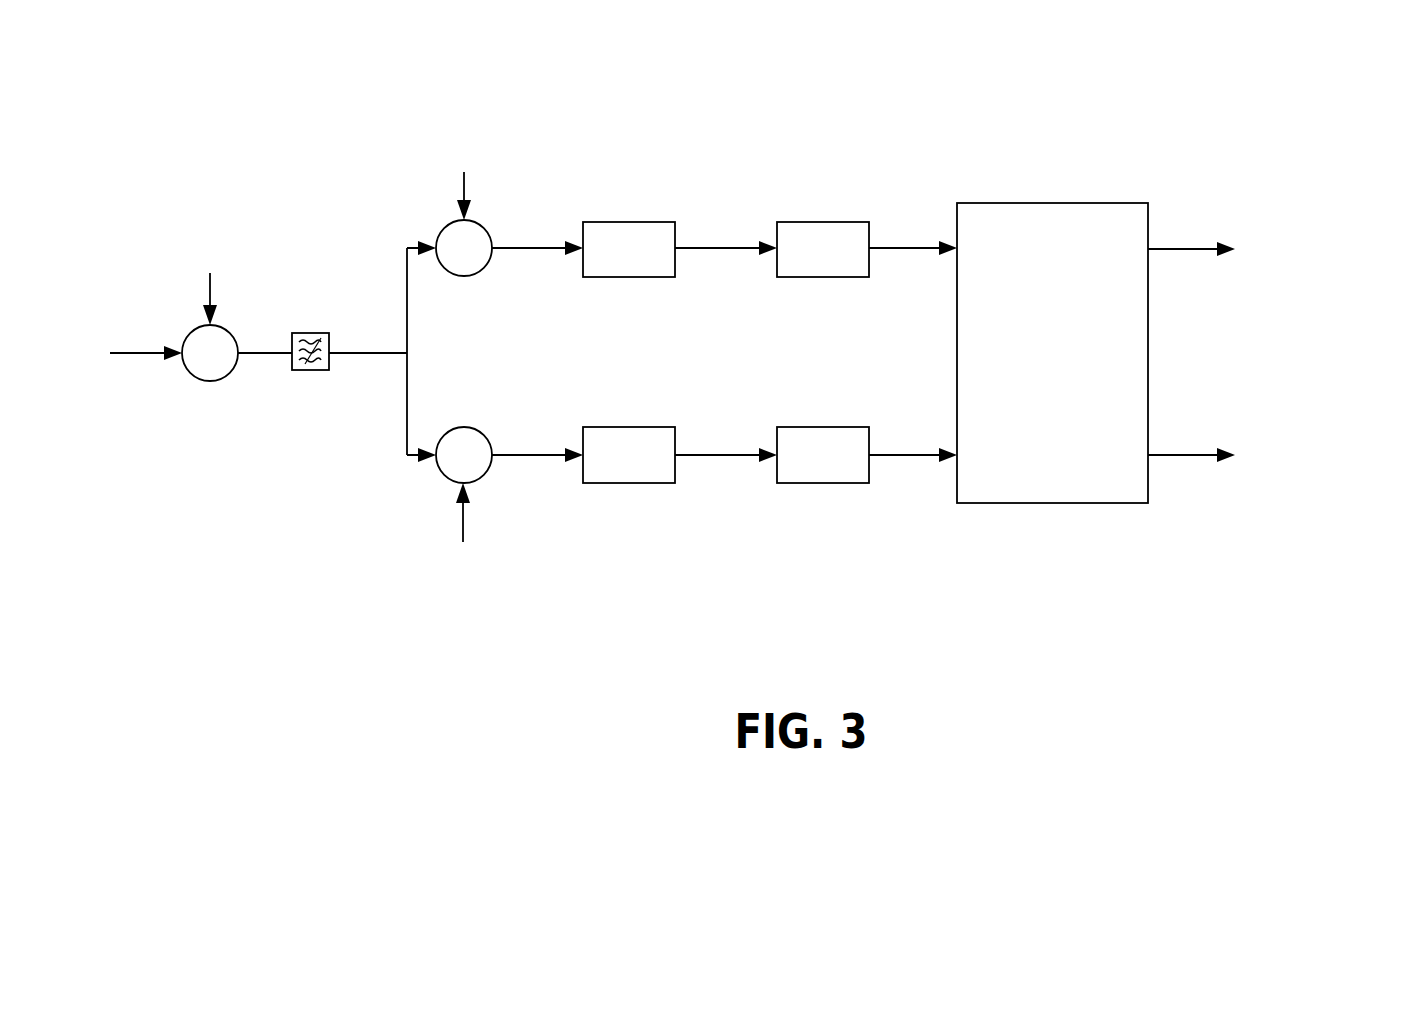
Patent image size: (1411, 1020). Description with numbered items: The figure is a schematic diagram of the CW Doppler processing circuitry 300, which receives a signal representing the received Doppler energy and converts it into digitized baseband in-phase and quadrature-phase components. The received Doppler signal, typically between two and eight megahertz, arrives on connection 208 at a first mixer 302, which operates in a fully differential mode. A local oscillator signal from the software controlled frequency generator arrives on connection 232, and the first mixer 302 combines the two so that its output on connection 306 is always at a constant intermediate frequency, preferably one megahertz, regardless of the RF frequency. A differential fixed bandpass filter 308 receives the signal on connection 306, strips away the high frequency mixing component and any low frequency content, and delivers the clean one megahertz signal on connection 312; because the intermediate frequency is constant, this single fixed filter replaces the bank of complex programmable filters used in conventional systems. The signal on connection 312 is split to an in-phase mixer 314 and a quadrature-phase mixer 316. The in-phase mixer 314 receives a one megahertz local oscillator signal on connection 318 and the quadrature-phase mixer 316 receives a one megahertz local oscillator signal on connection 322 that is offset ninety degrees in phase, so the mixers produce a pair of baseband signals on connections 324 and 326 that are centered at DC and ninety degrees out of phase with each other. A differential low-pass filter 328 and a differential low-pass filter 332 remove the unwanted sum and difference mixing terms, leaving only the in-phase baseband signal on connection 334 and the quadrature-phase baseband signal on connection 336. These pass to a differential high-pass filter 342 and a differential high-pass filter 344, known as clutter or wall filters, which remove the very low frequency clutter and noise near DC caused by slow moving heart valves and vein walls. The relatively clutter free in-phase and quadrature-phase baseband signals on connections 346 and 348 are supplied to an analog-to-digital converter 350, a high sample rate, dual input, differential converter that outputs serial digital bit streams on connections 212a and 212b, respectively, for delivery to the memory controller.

The CW Doppler processing circuitry 300 is at (195, 60).
The connection 208 is at (142, 350).
The connection 232 is at (208, 287).
The first mixer 302 is at (210, 381).
The connection 306 is at (265, 350).
The differential fixed bandpass filter 308 is at (322, 371).
The connection 312 is at (368, 350).
The in-phase mixer 314 is at (465, 277).
The quadrature-phase mixer 316 is at (464, 427).
The connection 318 is at (462, 190).
The connection 322 is at (462, 520).
The connection 324 is at (517, 250).
The connection 326 is at (522, 457).
The differential low-pass filter 328 is at (608, 263).
The differential low-pass filter 332 is at (608, 468).
The connection 334 is at (703, 252).
The connection 336 is at (706, 457).
The differential high-pass filter 342 is at (803, 263).
The differential high-pass filter 344 is at (803, 468).
The connection 346 is at (900, 252).
The connection 348 is at (903, 457).
The analog-to-digital converter 350 is at (968, 238).
The connection 212a is at (1187, 245).
The connection 212b is at (1188, 450).